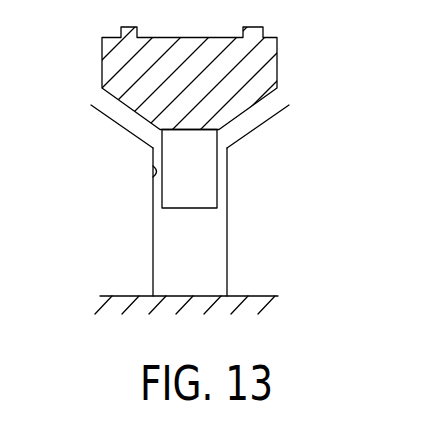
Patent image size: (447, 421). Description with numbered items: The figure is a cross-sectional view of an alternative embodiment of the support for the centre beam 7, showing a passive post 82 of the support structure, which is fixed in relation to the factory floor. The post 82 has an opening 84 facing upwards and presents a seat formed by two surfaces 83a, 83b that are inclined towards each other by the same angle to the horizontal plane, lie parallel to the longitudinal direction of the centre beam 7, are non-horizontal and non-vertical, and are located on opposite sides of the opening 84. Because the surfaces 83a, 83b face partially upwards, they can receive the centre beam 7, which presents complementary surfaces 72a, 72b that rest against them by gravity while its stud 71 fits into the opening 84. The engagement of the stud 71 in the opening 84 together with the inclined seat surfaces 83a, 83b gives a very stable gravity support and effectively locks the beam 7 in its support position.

The centre beam 7 is at (278, 57).
The stud 71 is at (210, 188).
The surface 72a is at (141, 124).
The surface 72b is at (226, 129).
The passive post 82 is at (152, 235).
The surface 83a is at (121, 124).
The surface 83b is at (252, 127).
The opening 84 is at (147, 169).